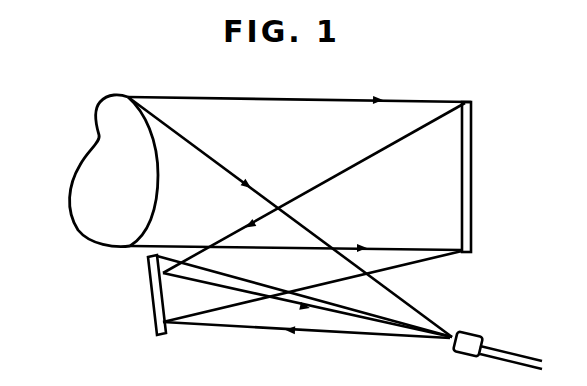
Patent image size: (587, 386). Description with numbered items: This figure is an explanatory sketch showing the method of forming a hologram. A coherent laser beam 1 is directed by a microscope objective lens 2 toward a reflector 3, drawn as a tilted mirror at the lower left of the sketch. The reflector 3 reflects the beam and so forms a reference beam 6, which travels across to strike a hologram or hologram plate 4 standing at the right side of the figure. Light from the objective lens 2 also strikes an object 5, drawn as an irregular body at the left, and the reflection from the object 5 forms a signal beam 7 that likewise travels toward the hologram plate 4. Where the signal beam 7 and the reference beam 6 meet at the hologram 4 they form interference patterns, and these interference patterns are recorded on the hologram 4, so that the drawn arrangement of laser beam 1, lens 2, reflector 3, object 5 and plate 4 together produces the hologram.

The coherent laser beam 1 is at (509, 349).
The microscope objective lens 2 is at (478, 330).
The reflector 3 is at (150, 320).
The hologram plate 4 is at (472, 115).
The object 5 is at (80, 177).
The reference beam 6 is at (224, 298).
The signal beam 7 is at (250, 98).